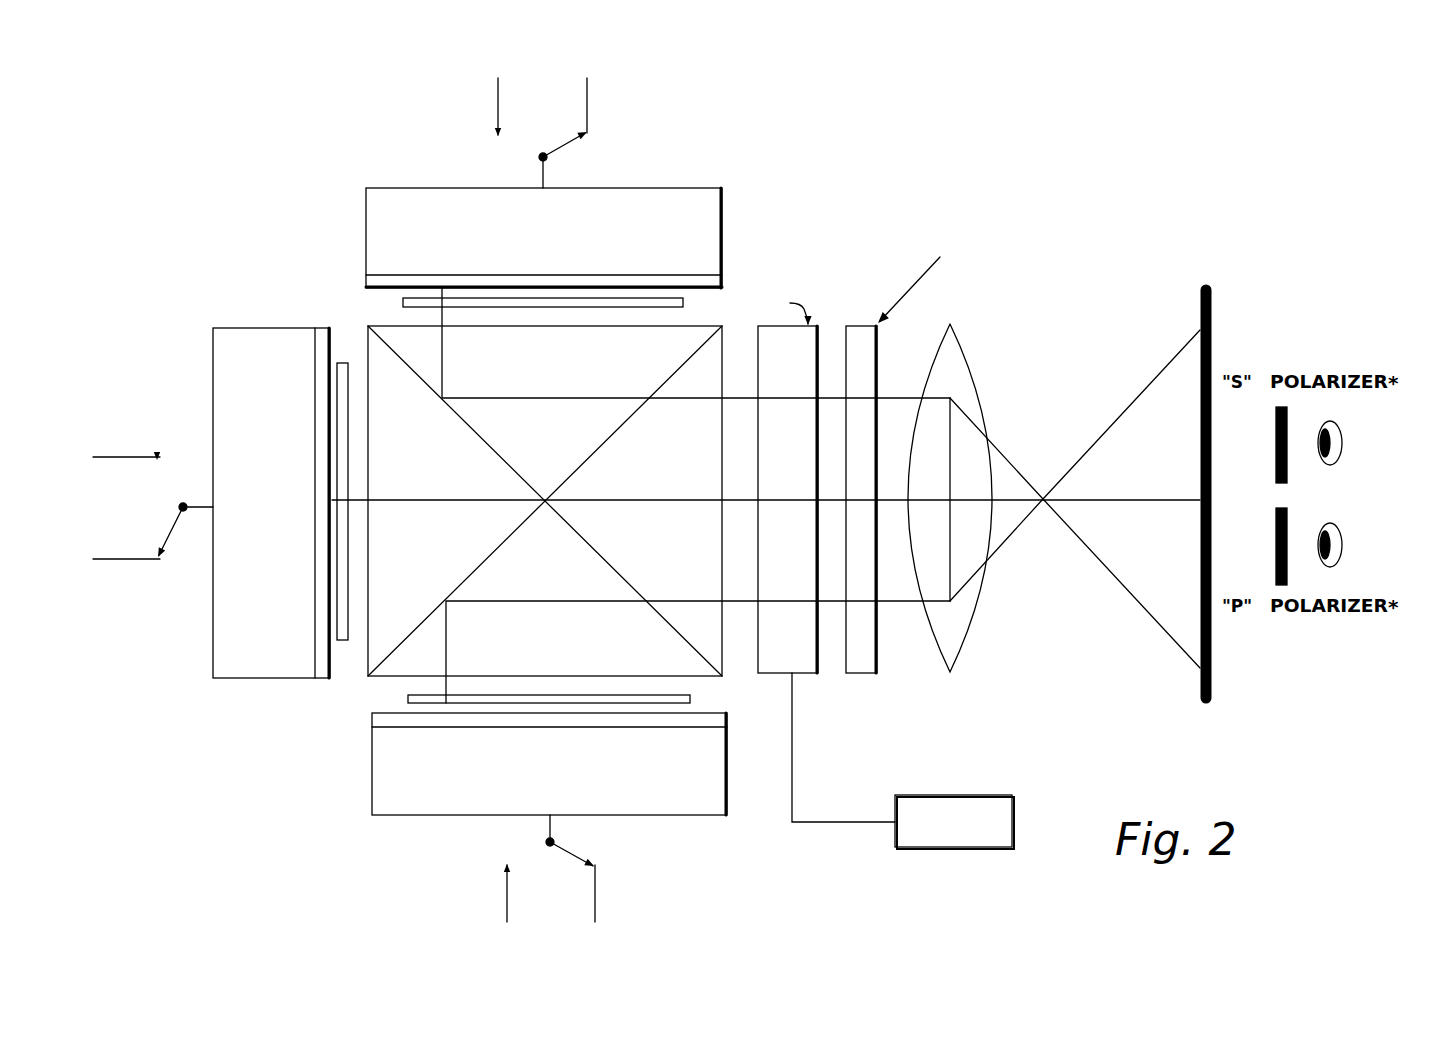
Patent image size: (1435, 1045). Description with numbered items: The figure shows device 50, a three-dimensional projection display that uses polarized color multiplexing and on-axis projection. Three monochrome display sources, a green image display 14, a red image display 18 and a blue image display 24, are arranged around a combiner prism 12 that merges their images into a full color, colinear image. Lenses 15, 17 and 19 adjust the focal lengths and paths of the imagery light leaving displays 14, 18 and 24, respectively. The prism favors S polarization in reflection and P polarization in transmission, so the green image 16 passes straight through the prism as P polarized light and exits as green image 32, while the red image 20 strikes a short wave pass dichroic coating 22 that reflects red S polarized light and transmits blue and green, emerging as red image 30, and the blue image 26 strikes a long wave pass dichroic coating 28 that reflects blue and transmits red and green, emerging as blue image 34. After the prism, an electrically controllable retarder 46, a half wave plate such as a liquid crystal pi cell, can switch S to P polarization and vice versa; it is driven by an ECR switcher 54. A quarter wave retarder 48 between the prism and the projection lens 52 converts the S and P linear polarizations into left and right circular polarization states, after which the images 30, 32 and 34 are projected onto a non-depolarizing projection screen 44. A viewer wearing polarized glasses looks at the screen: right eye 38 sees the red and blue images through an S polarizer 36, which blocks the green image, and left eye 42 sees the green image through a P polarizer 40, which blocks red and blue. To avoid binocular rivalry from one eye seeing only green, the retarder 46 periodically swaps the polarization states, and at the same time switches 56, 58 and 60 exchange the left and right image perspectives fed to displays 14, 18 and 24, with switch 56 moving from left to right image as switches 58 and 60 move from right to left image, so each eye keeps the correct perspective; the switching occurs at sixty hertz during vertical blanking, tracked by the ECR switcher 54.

The combiner prism 12 is at (442, 550).
The green image display 14 is at (328, 328).
The lens 15 is at (345, 640).
The green image 16 is at (418, 500).
The lens 17 is at (403, 303).
The red image display 18 is at (722, 282).
The lens 19 is at (408, 698).
The red image 20 is at (442, 372).
The dichroic coating 22 is at (503, 457).
The blue image display 24 is at (727, 713).
The blue image 26 is at (446, 660).
The dichroic coating 28 is at (495, 550).
The red image 30 is at (745, 398).
The green image 32 is at (745, 500).
The blue image 34 is at (745, 601).
The S polarizer 36 is at (1286, 421).
The right eye 38 is at (1341, 430).
The P polarizer 40 is at (1286, 525).
The left eye 42 is at (1341, 533).
The projection screen 44 is at (1209, 297).
The electrically controllable retarder 46 is at (810, 673).
The quarter wave retarder 48 is at (858, 324).
The device 50 is at (1172, 146).
The projection lens 52 is at (963, 331).
The ECR switcher 54 is at (965, 801).
The switch 56 is at (183, 505).
The switch 58 is at (547, 157).
The switch 60 is at (554, 842).